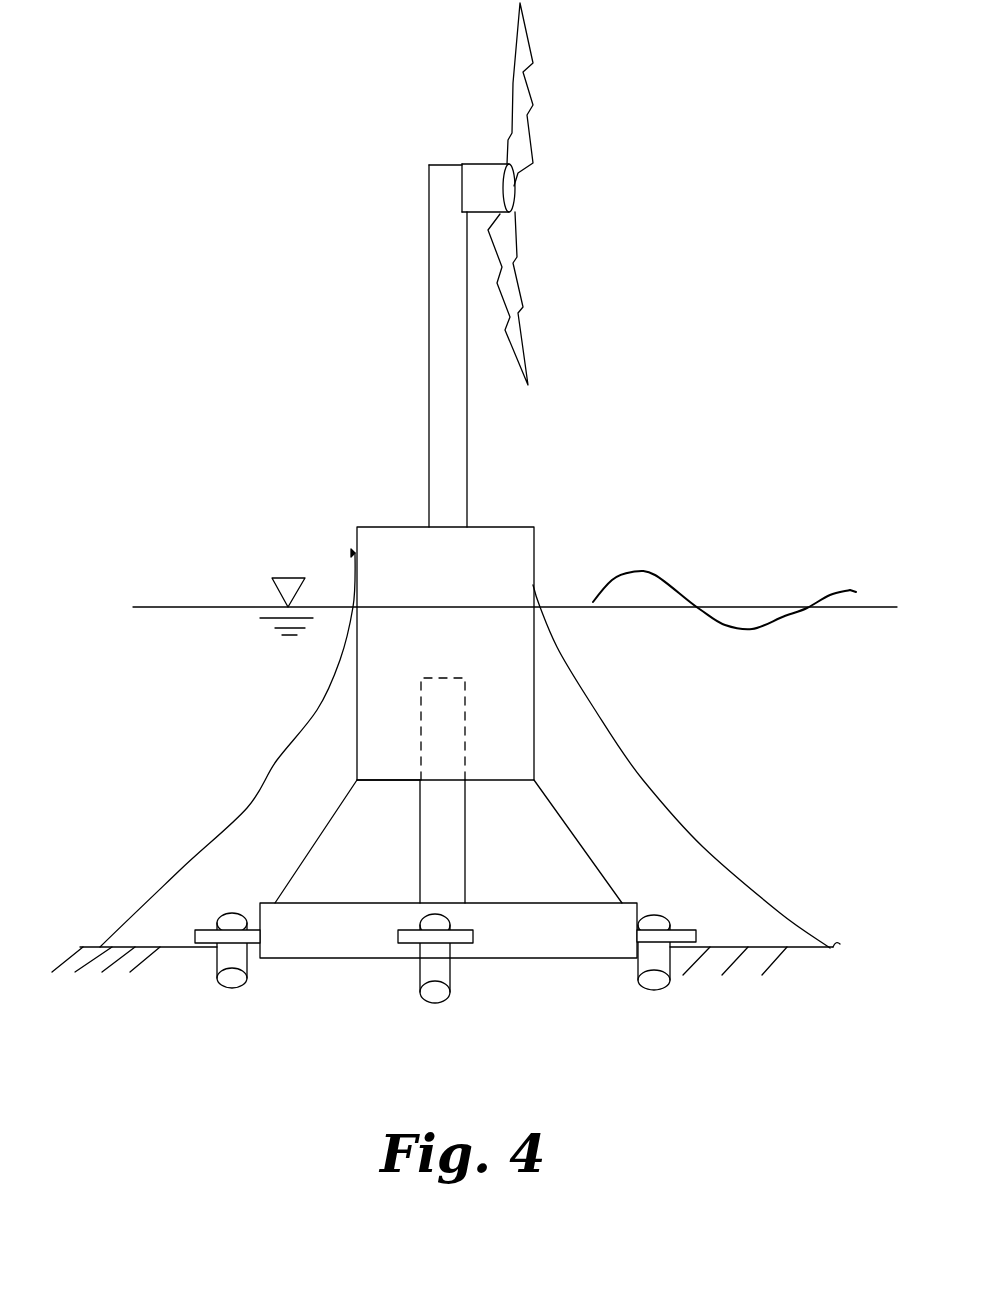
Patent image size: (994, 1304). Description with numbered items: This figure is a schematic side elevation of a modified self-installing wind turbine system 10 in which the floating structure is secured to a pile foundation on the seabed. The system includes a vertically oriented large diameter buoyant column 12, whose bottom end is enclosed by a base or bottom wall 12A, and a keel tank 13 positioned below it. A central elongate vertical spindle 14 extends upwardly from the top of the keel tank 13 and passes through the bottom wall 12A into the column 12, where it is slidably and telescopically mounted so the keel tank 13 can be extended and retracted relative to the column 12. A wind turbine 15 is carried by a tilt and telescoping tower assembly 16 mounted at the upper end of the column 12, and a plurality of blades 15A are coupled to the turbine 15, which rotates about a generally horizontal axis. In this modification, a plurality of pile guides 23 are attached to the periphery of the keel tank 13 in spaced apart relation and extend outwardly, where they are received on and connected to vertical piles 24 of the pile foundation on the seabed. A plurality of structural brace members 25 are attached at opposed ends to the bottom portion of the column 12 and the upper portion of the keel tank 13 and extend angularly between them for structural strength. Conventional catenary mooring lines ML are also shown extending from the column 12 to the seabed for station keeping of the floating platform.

The self-installing wind turbine system 10 is at (652, 421).
The buoyant column 12 is at (534, 742).
The bottom wall 12A is at (388, 782).
The keel tank 13 is at (565, 944).
The spindle 14 is at (455, 822).
The wind turbine 15 is at (510, 194).
The blades 15A is at (532, 102).
The tilt and telescoping tower assembly 16 is at (422, 354).
The pile guides 23 is at (200, 938).
The vertical piles 24 is at (247, 970).
The structural brace members 25 is at (317, 838).
The mooring lines ML is at (247, 808).